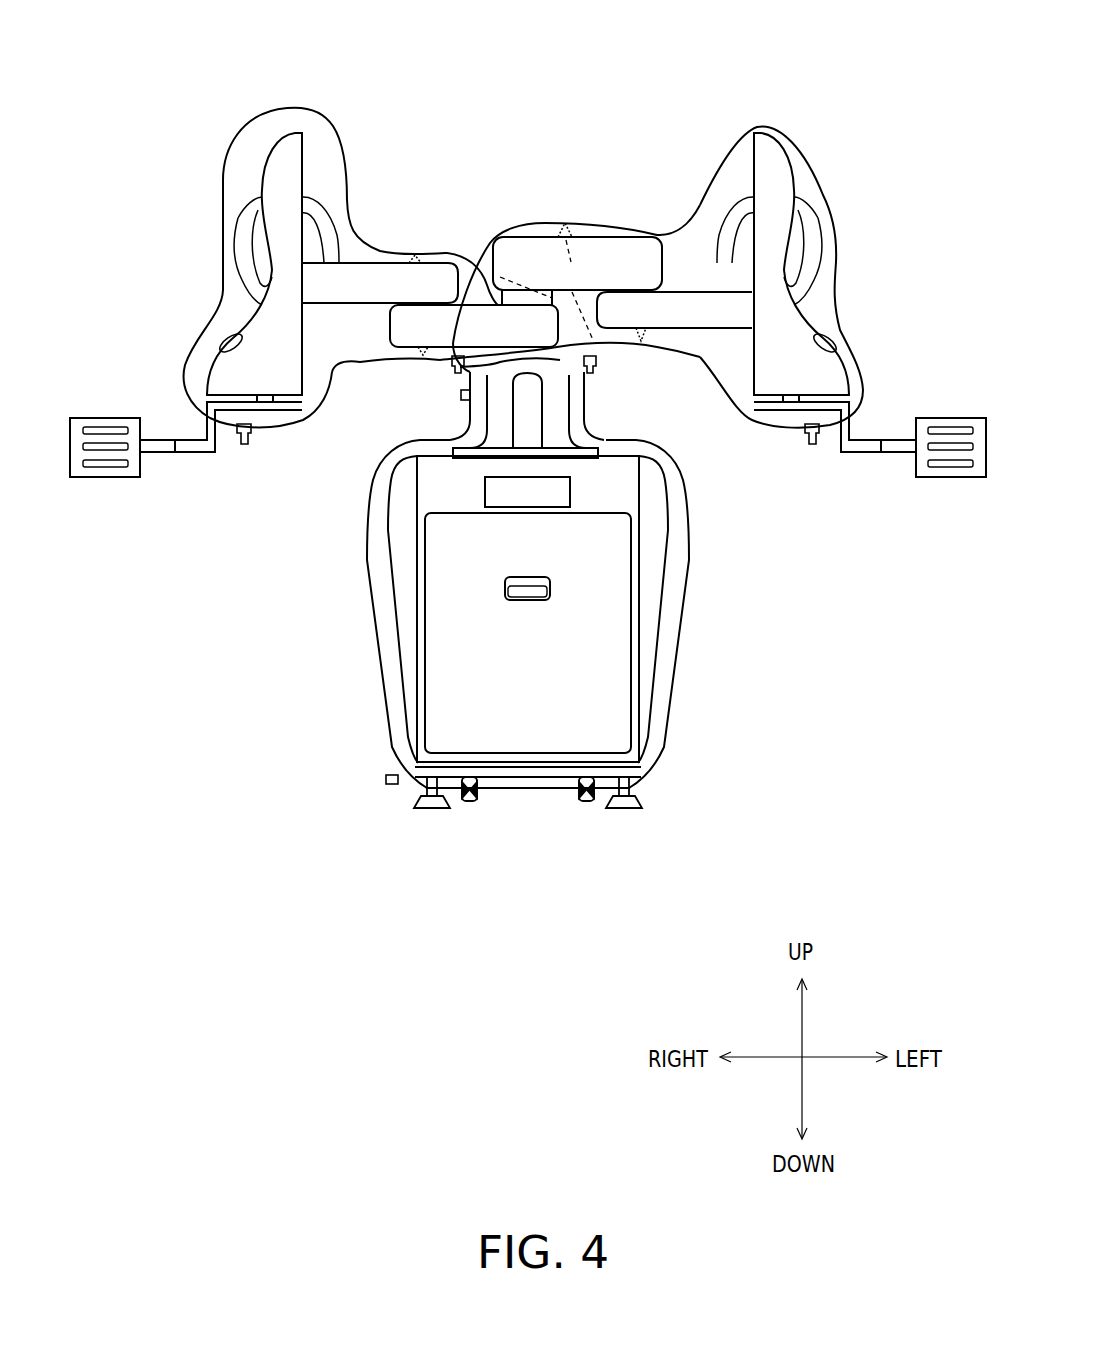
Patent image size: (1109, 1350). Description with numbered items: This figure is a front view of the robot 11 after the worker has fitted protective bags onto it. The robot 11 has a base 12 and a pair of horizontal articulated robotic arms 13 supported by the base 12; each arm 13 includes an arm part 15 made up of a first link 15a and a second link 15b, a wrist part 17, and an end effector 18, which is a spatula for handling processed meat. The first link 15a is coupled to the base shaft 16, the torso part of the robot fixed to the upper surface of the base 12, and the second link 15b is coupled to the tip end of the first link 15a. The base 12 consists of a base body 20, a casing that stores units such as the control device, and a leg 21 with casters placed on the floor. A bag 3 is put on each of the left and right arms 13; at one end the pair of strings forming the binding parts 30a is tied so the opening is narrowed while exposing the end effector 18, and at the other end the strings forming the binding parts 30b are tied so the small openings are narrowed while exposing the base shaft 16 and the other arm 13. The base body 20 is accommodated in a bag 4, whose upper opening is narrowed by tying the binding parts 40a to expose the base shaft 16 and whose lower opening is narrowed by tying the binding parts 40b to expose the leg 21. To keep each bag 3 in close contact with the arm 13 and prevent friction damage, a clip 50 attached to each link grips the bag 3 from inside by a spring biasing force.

The robot 11 is at (725, 98).
The bag 3 is at (225, 168).
The robotic arm 13 is at (302, 126).
The arm part 15 is at (527, 228).
The first link 15a is at (472, 295).
The second link 15b is at (370, 250).
The base shaft 16 is at (585, 398).
The wrist part 17 is at (232, 330).
The end effector 18 is at (105, 418).
The binding part 30a is at (245, 447).
The binding part 30b is at (452, 370).
The binding part 40a is at (461, 396).
The binding part 40b is at (386, 779).
The clip 50 is at (563, 226).
The bag 4 is at (357, 578).
The base 12 is at (676, 568).
The base body 20 is at (668, 617).
The leg 21 is at (640, 800).